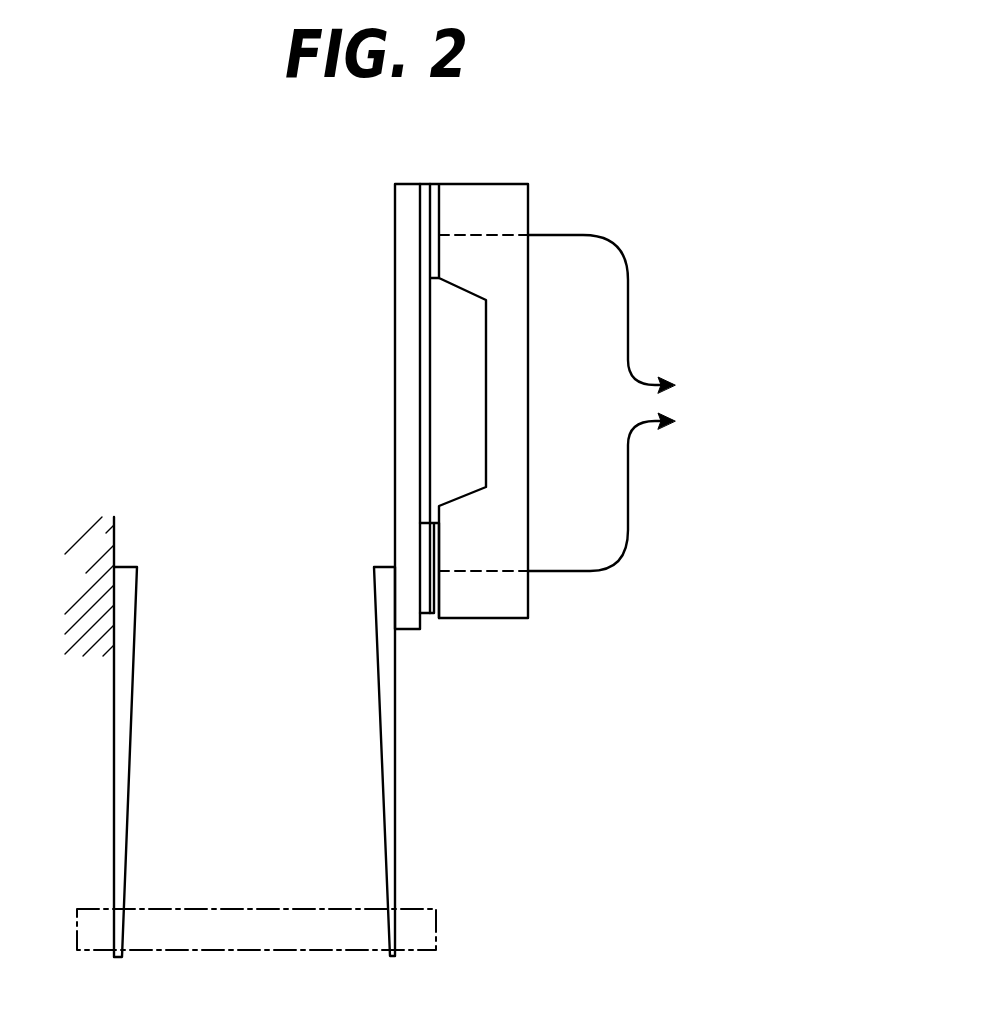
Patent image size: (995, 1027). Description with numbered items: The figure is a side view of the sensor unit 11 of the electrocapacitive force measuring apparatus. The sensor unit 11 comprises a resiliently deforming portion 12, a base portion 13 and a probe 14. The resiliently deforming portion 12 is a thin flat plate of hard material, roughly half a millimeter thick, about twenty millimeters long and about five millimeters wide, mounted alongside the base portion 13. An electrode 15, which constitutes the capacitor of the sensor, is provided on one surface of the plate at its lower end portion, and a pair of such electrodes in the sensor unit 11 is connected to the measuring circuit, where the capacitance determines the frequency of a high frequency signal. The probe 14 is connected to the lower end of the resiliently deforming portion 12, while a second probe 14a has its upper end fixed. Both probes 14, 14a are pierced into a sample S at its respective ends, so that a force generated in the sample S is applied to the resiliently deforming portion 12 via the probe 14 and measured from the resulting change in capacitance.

The sensor unit 11 is at (350, 317).
The resiliently deforming portion 12 is at (395, 380).
The base portion 13 is at (515, 413).
The probe 14 is at (383, 793).
The probe 14a is at (114, 768).
The electrode 15 is at (428, 613).
The sample S is at (237, 950).